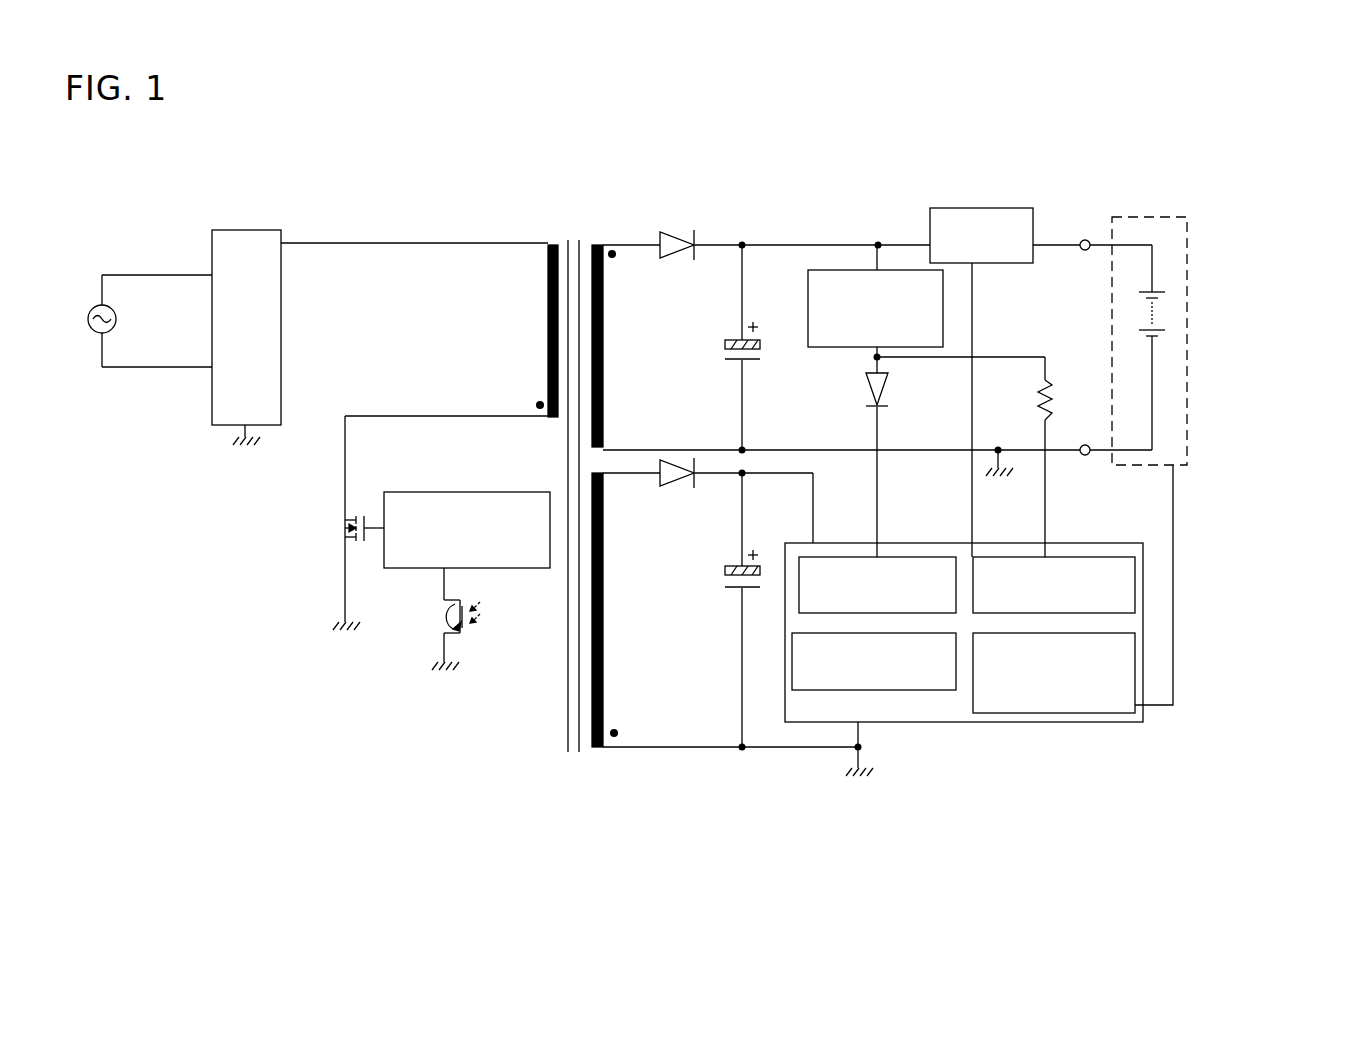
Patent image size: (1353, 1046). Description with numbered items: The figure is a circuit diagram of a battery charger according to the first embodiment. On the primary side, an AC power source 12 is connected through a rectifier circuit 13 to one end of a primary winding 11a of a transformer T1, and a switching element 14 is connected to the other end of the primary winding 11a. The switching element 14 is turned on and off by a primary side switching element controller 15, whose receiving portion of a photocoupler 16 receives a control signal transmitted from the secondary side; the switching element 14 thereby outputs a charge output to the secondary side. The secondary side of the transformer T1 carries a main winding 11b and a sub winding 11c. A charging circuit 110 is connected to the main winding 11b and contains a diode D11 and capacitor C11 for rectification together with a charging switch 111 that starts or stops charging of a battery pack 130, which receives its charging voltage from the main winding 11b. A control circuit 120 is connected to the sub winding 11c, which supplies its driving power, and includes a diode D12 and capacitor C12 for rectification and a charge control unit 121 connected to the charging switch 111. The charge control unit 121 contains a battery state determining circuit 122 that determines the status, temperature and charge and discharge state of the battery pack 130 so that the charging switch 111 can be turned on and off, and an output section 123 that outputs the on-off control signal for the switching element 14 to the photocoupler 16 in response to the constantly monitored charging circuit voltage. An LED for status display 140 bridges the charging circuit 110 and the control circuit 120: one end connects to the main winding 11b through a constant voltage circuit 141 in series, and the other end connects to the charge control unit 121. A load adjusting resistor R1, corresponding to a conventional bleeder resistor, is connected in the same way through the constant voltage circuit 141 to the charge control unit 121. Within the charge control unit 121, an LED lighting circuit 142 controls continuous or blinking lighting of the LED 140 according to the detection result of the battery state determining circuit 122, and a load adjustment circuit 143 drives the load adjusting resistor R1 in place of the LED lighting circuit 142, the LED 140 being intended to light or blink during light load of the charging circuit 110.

The AC power source 12 is at (94, 304).
The rectifier circuit 13 is at (232, 230).
The transformer T1 is at (566, 235).
The primary winding 11a is at (548, 360).
The main winding 11b is at (606, 299).
The sub winding 11c is at (600, 750).
The switching element 14 is at (348, 529).
The switching element controller 15 is at (458, 492).
The photocoupler 16 is at (437, 630).
The diode D11 is at (683, 261).
The diode D12 is at (683, 490).
The capacitor C11 is at (721, 342).
The capacitor C12 is at (721, 570).
The load adjusting resistor R1 is at (1086, 353).
The charging circuit 110 is at (843, 182).
The charging switch 111 is at (987, 208).
The battery pack 130 is at (1188, 322).
The LED for status display 140 is at (864, 380).
The constant voltage circuit 141 is at (808, 297).
The LED lighting circuit 142 is at (906, 555).
The load adjustment circuit 143 is at (1076, 555).
The control circuit 120 is at (952, 797).
The charge control unit 121 is at (1143, 722).
The battery state determining circuit 122 is at (1050, 713).
The output section 123 is at (887, 690).